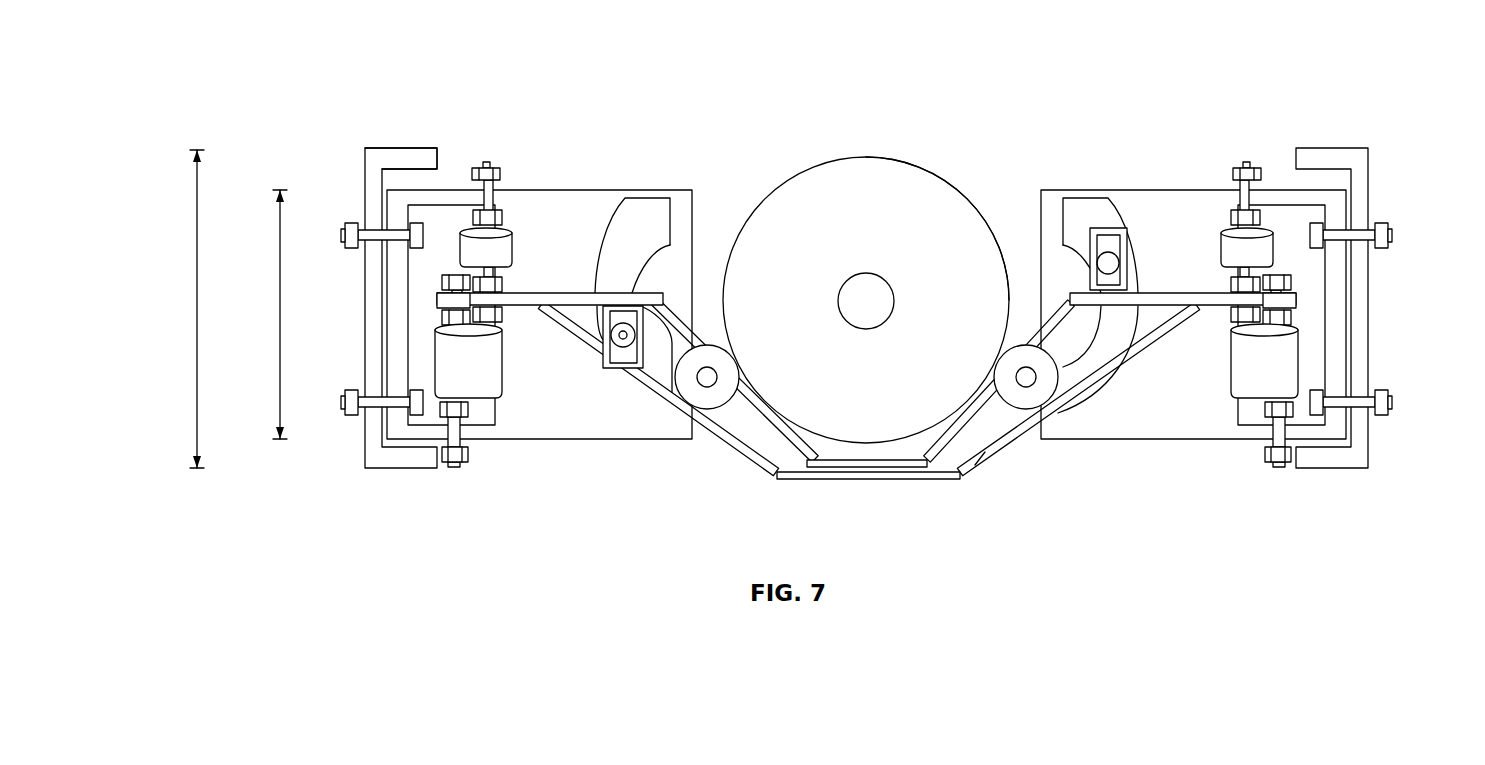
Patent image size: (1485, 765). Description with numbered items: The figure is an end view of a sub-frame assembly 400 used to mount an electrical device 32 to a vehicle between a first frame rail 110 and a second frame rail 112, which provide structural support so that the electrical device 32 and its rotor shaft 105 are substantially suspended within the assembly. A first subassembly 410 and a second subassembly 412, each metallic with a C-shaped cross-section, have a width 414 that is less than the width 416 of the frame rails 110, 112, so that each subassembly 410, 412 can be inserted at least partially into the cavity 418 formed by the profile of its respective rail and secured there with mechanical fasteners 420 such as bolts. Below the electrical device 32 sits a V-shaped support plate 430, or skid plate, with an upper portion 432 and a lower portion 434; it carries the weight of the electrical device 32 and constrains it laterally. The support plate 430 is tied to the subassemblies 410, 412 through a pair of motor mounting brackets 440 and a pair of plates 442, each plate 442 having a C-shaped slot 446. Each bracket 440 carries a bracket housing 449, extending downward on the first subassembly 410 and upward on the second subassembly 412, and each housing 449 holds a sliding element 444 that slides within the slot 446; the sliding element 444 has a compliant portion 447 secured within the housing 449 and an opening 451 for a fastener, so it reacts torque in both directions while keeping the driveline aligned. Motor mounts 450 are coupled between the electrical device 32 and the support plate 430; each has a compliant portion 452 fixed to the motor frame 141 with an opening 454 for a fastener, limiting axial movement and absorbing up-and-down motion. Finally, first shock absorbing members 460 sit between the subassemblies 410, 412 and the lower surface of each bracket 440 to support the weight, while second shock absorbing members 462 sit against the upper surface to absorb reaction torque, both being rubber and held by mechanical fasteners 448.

The sub-frame assembly 400 is at (405, 42).
The first frame rail 110 is at (390, 150).
The second frame rail 112 is at (1330, 148).
The cavity 418 is at (430, 173).
The width of frame rails 416 is at (197, 290).
The width of subassembly 414 is at (280, 325).
The plate 442 is at (624, 198).
The first subassembly 410 is at (405, 432).
The second subassembly 412 is at (1337, 420).
The C-shaped cross-sectional slot 446 is at (675, 205).
The opening 451 is at (671, 244).
The sliding element 444 is at (634, 372).
The lower portion 434 is at (1015, 433).
The support plate 430 is at (1034, 433).
The compliant portion 452 is at (985, 463).
The upper portion 432 is at (922, 476).
The motor mounting bracket 440 is at (523, 293).
The compliant portion 447 is at (611, 336).
The bracket housing 449 is at (628, 352).
The motor mount 450 is at (729, 420).
The opening 454 is at (1040, 402).
The mechanical fastener 448 is at (1232, 168).
The second shock absorbing member 462 is at (516, 238).
The first shock absorbing member 460 is at (513, 373).
The mechanical fastener 420 is at (345, 413).
The electrical device 32 is at (965, 218).
The motor frame 141 is at (945, 180).
The rotor shaft 105 is at (866, 272).